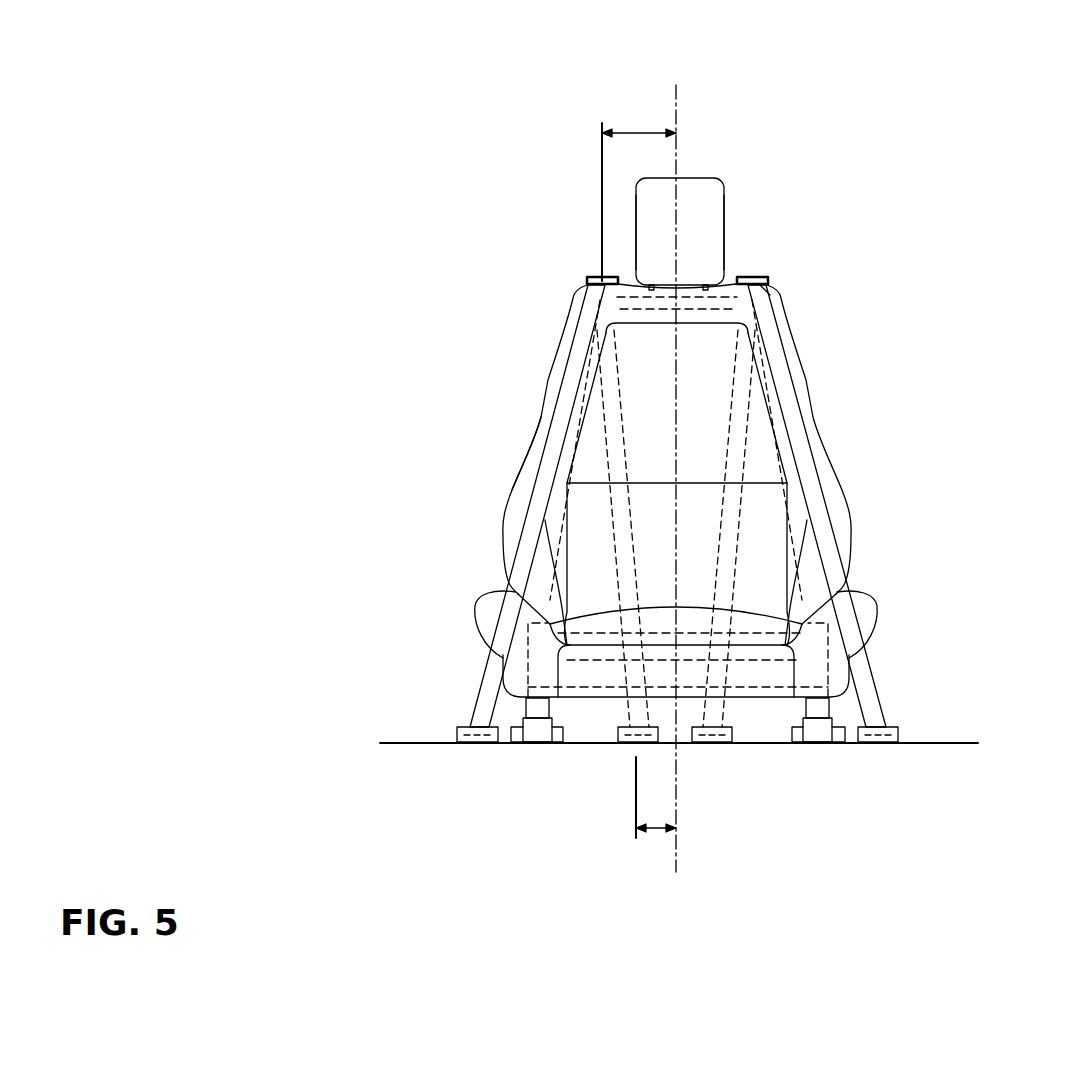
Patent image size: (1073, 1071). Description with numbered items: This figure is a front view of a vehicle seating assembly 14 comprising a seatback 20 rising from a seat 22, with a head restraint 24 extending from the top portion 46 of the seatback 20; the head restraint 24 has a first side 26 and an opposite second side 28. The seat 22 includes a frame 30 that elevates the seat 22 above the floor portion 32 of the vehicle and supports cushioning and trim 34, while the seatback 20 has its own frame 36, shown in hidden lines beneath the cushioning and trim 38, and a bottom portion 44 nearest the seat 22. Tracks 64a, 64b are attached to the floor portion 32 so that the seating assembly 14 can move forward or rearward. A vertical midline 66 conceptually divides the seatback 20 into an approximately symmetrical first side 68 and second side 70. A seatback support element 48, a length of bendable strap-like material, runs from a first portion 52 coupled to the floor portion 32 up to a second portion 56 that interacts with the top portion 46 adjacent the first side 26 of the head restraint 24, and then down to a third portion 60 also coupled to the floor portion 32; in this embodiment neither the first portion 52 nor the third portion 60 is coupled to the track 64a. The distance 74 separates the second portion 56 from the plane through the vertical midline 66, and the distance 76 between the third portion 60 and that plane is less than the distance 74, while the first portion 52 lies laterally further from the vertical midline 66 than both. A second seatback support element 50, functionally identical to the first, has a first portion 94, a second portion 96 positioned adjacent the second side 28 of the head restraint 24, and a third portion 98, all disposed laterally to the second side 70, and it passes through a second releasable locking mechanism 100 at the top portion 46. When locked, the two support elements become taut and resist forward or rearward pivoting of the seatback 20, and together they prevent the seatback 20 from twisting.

The seating assembly 14 is at (727, 223).
The seatback 20 is at (725, 290).
The seat 22 is at (703, 637).
The head restraint 24 is at (703, 180).
The first side 26 is at (636, 222).
The second side 28 is at (727, 207).
The frame 30 is at (528, 650).
The floor portion 32 is at (950, 746).
The cushioning and trim 34 is at (860, 607).
The frame 36 is at (557, 403).
The cushioning and trim 38 is at (556, 350).
The bottom portion 44 is at (690, 607).
The top portion 46 is at (652, 283).
The seatback support element 48 is at (536, 459).
The second seatback support element 50 is at (810, 420).
The first portion 52 is at (470, 738).
The second portion 56 is at (588, 280).
The third portion 60 is at (628, 745).
The track 64a is at (518, 745).
The track 64b is at (830, 745).
The vertical midline 66 is at (676, 95).
The first side 68 is at (505, 497).
The second side 70 is at (840, 477).
The distance 74 is at (628, 133).
The distance 76 is at (655, 835).
The first portion 94 is at (877, 720).
The second portion 96 is at (770, 278).
The third portion 98 is at (706, 745).
The second releasable locking mechanism 100 is at (765, 263).